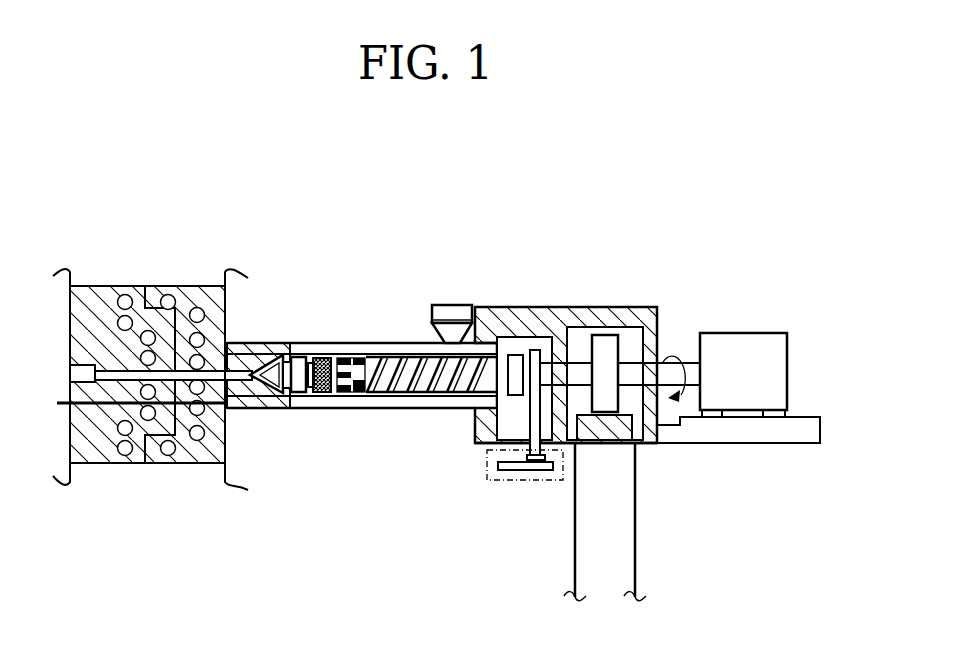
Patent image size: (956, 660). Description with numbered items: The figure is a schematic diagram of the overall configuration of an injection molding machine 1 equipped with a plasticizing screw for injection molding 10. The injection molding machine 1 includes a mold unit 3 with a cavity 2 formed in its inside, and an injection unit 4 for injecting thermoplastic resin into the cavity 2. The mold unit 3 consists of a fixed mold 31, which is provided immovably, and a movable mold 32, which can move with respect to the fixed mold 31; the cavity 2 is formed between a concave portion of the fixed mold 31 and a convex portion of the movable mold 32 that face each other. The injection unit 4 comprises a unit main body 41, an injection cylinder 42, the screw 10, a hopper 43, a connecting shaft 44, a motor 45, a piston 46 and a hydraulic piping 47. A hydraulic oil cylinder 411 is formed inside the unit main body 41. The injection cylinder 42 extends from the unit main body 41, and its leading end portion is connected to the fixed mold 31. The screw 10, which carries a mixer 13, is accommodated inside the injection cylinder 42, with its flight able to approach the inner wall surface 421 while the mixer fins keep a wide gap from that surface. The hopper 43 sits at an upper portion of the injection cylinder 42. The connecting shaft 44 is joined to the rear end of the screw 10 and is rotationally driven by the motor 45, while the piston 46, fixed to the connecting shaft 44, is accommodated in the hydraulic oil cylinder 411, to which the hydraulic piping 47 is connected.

The injection molding machine 1 is at (524, 240).
The cavity 2 is at (157, 448).
The mold unit 3 is at (192, 476).
The fixed mold 31 is at (178, 285).
The movable mold 32 is at (97, 285).
The injection unit 4 is at (567, 288).
The unit main body 41 is at (625, 307).
The hydraulic oil cylinder 411 is at (572, 405).
The injection cylinder 42 is at (297, 409).
The inner wall surface 421 is at (283, 362).
The hopper 43 is at (445, 305).
The connecting shaft 44 is at (632, 362).
The motor 45 is at (750, 333).
The piston 46 is at (622, 400).
The hydraulic piping 47 is at (575, 536).
The plasticizing screw for injection molding 10 is at (382, 333).
The mixer 13 is at (355, 393).